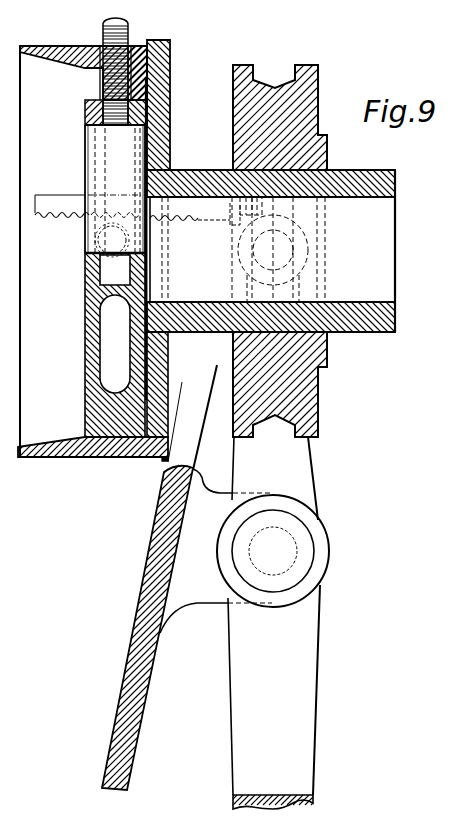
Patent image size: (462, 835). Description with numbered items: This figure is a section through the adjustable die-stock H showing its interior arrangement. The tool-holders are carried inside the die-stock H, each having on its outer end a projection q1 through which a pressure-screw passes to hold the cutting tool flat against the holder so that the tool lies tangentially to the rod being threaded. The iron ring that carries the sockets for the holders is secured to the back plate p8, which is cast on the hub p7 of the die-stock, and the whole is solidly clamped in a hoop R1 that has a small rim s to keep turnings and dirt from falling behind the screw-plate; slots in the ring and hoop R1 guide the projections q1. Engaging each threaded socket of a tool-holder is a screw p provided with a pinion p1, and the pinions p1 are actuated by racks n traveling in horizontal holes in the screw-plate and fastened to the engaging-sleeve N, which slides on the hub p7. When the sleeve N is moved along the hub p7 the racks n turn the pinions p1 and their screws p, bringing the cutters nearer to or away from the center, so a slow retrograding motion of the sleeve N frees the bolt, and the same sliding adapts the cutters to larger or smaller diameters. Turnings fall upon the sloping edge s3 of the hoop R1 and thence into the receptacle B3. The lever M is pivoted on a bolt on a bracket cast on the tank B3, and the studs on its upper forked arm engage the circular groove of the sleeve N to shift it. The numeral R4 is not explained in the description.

The die-stock H is at (83, 251).
The hoop R1 is at (129, 78).
The projection q1 is at (84, 114).
The back plate p8 is at (149, 220).
The hub p7 is at (271, 251).
The rack n is at (137, 210).
The pinion p1 is at (112, 240).
The engaging-sleeve N is at (280, 251).
The screw p is at (157, 384).
The base flange R4 is at (93, 449).
The sloping edge s3 is at (48, 444).
The rim s is at (152, 470).
The receptacle B3 is at (148, 548).
The lever M is at (273, 623).